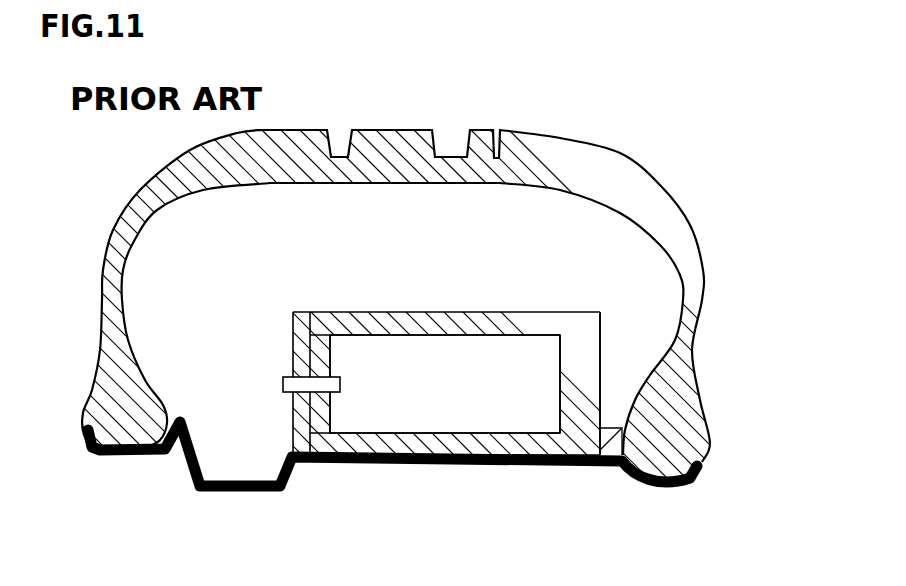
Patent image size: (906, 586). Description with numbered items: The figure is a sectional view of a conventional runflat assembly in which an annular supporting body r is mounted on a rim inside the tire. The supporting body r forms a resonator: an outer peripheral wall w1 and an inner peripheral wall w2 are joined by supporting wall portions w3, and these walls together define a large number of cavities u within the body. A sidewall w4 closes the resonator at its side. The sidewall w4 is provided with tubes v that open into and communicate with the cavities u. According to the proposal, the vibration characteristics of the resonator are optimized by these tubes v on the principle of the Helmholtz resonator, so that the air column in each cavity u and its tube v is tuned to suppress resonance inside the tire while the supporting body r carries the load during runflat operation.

The outer peripheral wall w1 is at (436, 311).
The inner peripheral wall w2 is at (507, 455).
The supporting wall portion w3 is at (580, 386).
The sidewall w4 is at (317, 362).
The cavity u is at (398, 405).
The tube v is at (290, 396).
The annular supporting body r is at (600, 345).